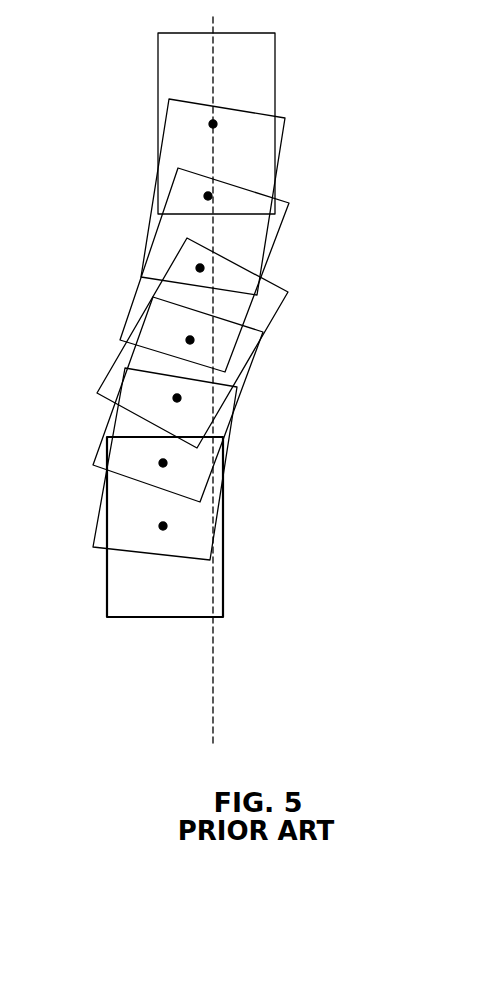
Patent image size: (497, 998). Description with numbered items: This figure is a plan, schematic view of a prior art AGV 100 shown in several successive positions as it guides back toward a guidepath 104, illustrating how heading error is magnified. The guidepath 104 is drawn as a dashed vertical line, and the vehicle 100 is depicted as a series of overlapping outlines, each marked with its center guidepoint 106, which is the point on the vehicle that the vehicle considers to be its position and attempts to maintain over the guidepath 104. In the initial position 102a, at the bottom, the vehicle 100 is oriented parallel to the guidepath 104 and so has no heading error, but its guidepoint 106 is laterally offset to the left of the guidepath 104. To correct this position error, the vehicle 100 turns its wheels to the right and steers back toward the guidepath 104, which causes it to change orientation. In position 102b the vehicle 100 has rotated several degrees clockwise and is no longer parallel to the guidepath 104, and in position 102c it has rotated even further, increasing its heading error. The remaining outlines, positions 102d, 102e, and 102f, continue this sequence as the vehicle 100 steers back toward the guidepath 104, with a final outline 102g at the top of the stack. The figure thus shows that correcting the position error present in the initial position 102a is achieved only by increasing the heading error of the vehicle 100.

The AGV 100 is at (193, 313).
The initial position 102a is at (230, 532).
The position 102b is at (230, 502).
The position 102c is at (245, 388).
The position 102d is at (277, 317).
The position 102e is at (274, 247).
The position 102f is at (282, 140).
The die 102g is at (276, 73).
The guidepath 104 is at (230, 692).
The center guidepoint 106 is at (217, 124).